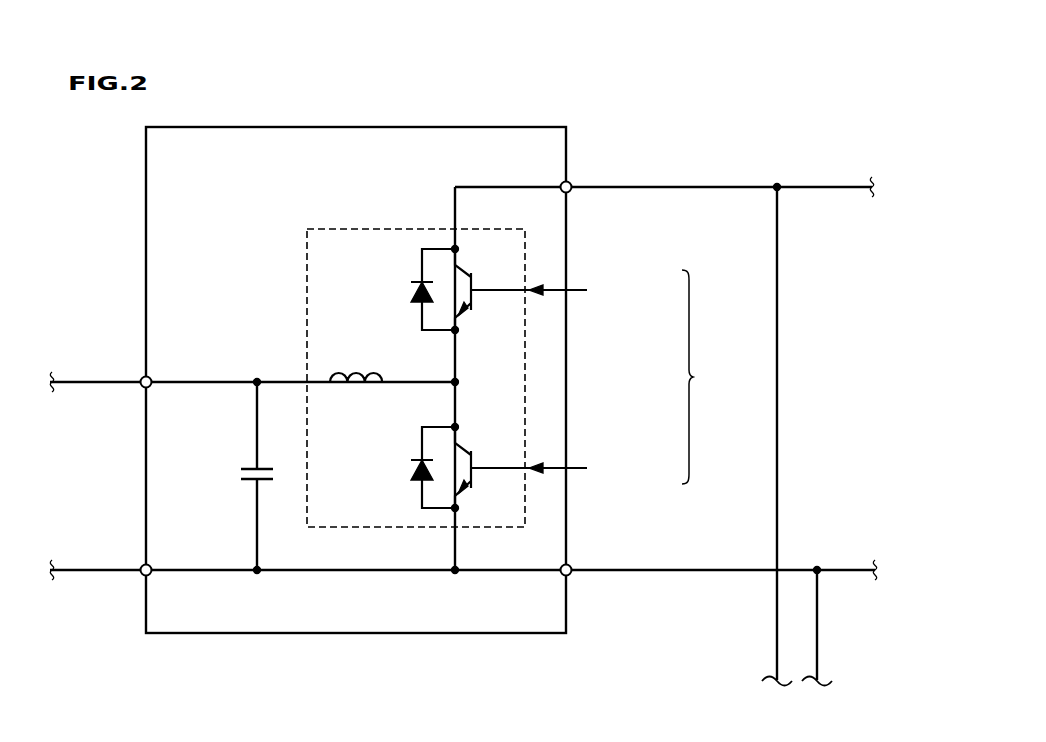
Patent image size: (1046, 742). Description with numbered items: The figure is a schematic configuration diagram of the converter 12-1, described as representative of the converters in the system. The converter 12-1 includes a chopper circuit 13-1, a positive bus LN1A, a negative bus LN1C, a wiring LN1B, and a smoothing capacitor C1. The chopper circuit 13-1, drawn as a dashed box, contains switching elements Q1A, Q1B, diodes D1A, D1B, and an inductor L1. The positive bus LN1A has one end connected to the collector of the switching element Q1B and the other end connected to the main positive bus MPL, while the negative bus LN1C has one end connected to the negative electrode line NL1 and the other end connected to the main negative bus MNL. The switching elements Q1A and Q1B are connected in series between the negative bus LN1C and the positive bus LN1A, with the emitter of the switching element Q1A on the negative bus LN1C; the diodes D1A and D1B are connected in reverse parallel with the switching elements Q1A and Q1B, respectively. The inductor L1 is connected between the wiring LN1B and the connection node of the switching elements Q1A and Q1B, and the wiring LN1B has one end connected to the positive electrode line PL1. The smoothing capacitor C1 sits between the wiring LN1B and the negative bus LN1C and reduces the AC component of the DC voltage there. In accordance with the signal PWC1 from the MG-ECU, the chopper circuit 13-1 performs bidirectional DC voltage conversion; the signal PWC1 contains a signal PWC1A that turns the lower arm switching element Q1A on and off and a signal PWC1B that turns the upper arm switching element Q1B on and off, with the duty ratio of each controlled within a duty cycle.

The converter 12-1 is at (527, 127).
The chopper circuit 13-1 is at (340, 229).
The positive bus LN1A is at (663, 177).
The wiring LN1B is at (229, 371).
The negative bus LN1C is at (535, 559).
The positive electrode line PL1 is at (82, 382).
The negative electrode line NL1 is at (88, 570).
The main positive bus MPL is at (845, 186).
The main negative bus MNL is at (848, 568).
The inductor L1 is at (356, 362).
The smoothing capacitor C1 is at (247, 468).
The switching element Q1A is at (481, 466).
The switching element Q1B is at (480, 288).
The diode D1A is at (413, 467).
The diode D1B is at (413, 289).
The signal PWC1 is at (720, 377).
The signal PWC1A is at (570, 469).
The signal PWC1B is at (570, 292).